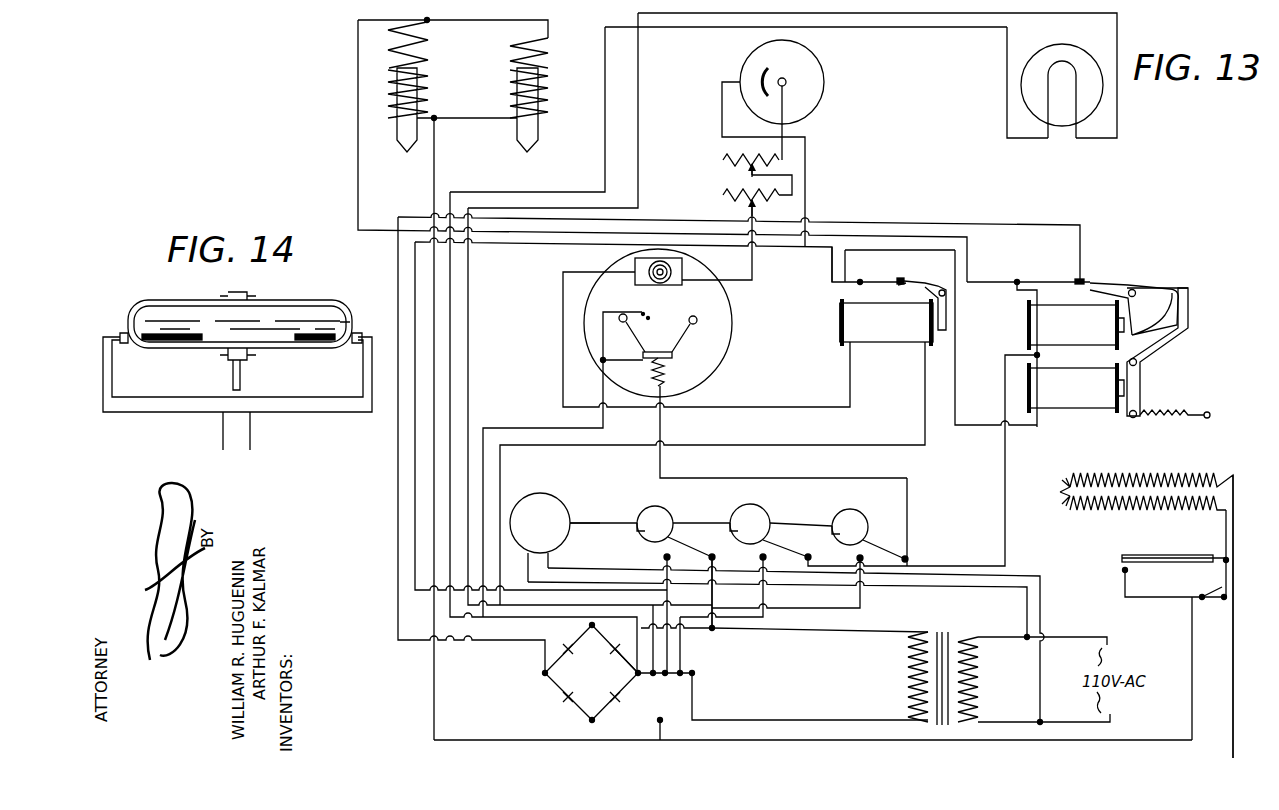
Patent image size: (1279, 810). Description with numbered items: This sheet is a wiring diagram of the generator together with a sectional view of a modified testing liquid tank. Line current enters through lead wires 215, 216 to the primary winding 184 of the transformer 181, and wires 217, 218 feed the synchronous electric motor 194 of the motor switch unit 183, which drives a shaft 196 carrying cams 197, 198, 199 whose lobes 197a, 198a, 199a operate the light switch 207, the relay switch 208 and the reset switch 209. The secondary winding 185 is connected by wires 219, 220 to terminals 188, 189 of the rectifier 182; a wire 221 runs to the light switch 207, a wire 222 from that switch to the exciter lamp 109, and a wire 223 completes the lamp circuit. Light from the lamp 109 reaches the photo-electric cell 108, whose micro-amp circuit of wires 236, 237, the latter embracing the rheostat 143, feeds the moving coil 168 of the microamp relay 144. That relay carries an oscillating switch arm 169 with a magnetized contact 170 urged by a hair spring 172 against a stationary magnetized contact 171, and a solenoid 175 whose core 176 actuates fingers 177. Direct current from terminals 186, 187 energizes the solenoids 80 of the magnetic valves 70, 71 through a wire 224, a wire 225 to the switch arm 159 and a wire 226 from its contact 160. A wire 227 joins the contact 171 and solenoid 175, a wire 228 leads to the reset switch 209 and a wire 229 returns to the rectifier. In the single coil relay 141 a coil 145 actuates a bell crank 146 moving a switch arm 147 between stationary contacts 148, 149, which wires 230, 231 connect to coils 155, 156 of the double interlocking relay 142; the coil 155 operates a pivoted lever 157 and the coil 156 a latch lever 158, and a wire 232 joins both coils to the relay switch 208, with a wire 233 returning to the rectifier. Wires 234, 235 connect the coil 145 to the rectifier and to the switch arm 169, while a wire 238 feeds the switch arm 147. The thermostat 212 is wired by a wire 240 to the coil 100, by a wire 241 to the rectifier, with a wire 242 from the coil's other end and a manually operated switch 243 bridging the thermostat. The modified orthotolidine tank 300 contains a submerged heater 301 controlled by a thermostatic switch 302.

In FIG. 13, the magnetic valve 70 is at (388, 68).
In FIG. 13, the magnetic valve 71 is at (548, 64).
In FIG. 13, the solenoid 80 is at (430, 62).
In FIG. 13, the coil 100 is at (1130, 476).
In FIG. 13, the photo-electric cell 108 is at (827, 70).
In FIG. 13, the electric exciter lamp 109 is at (1021, 80).
In FIG. 13, the single coil relay 141 is at (890, 344).
In FIG. 13, the double interlocking relay 142 is at (1162, 362).
In FIG. 13, the rheostat 143 is at (728, 176).
In FIG. 13, the microamp relay 144 is at (733, 318).
In FIG. 13, the coil 145 is at (841, 322).
In FIG. 13, the bell crank 146 is at (933, 293).
In FIG. 13, the switch arm 147 is at (866, 280).
In FIG. 13, the stationary contact 148 is at (906, 279).
In FIG. 13, the stationary contact 149 is at (899, 289).
In FIG. 13, the coil 155 is at (1074, 326).
In FIG. 13, the coil 156 is at (1076, 393).
In FIG. 13, the pivoted lever 157 is at (1160, 292).
In FIG. 13, the latch lever 158 is at (1188, 328).
In FIG. 13, the switch arm 159 is at (1039, 281).
In FIG. 13, the stationary contact 160 is at (1086, 279).
In FIG. 13, the moving coil 168 is at (672, 284).
In FIG. 13, the oscillating switch arm 169 is at (652, 296).
In FIG. 13, the permanently magnetized contact 170 is at (663, 323).
In FIG. 13, the stationary permanently magnetized contact 171 is at (640, 309).
In FIG. 13, the hair spring 172 is at (643, 316).
In FIG. 13, the solenoid 175 is at (664, 373).
In FIG. 13, the core 176 is at (657, 352).
In FIG. 13, the fingers 177 is at (641, 351).
In FIG. 13, the transformer 181 is at (905, 670).
In FIG. 13, the rectifier 182 is at (626, 688).
In FIG. 13, the motor switch unit 183 is at (594, 521).
In FIG. 13, the primary winding 184 is at (980, 696).
In FIG. 13, the secondary winding 185 is at (906, 694).
In FIG. 13, the rectifier terminal 186 is at (543, 676).
In FIG. 13, the rectifier terminal 187 is at (650, 676).
In FIG. 13, the rectifier terminal 188 is at (591, 626).
In FIG. 13, the rectifier terminal 189 is at (589, 721).
In FIG. 13, the synchronous electric motor 194 is at (536, 496).
In FIG. 13, the shaft 196 is at (600, 524).
In FIG. 13, the cam 197 is at (658, 503).
In FIG. 13, the lobe 197a is at (636, 523).
In FIG. 13, the cam 198 is at (758, 506).
In FIG. 13, the lobe 198a is at (730, 523).
In FIG. 13, the cam 199 is at (858, 513).
In FIG. 13, the lobe 199a is at (832, 526).
In FIG. 13, the light switch 207 is at (704, 556).
In FIG. 13, the cam operated relay switch 208 is at (806, 556).
In FIG. 13, the reset switch 209 is at (898, 556).
In FIG. 13, the thermostat 212 is at (1132, 555).
In FIG. 13, the lead wire 215 is at (1068, 637).
In FIG. 13, the lead wire 216 is at (1050, 722).
In FIG. 13, the wire 217 is at (1027, 604).
In FIG. 13, the wire 218 is at (1042, 610).
In FIG. 13, the wire 219 is at (798, 632).
In FIG. 13, the wire 220 is at (800, 721).
In FIG. 13, the wire 221 is at (713, 597).
In FIG. 13, the wire 222 is at (614, 591).
In FIG. 13, the wire 223 is at (605, 740).
In FIG. 13, the wire 224 is at (437, 170).
In FIG. 13, the wire 225 is at (358, 196).
In FIG. 13, the wire 226 is at (1012, 224).
In FIG. 13, the wire 227 is at (520, 428).
In FIG. 13, the wire 228 is at (664, 426).
In FIG. 13, the wire 229 is at (861, 603).
In FIG. 13, the wire 230 is at (1005, 285).
In FIG. 13, the wire 231 is at (969, 425).
In FIG. 13, the wire 232 is at (1005, 483).
In FIG. 13, the wire 233 is at (764, 597).
In FIG. 13, the wire 234 is at (925, 410).
In FIG. 13, the wire 235 is at (563, 334).
In FIG. 13, the wire 236 is at (722, 111).
In FIG. 13, the wire 237 is at (786, 127).
In FIG. 13, the wire 238 is at (754, 252).
In FIG. 13, the wire 240 is at (1226, 529).
In FIG. 13, the wire 241 is at (1192, 628).
In FIG. 13, the wire 242 is at (1233, 665).
In FIG. 13, the manually operated switch 243 is at (1214, 590).
In FIG. 14, the orthotolidine tank 300 is at (343, 302).
In FIG. 14, the heater 301 is at (182, 342).
In FIG. 14, the thermostatic switch 302 is at (320, 342).